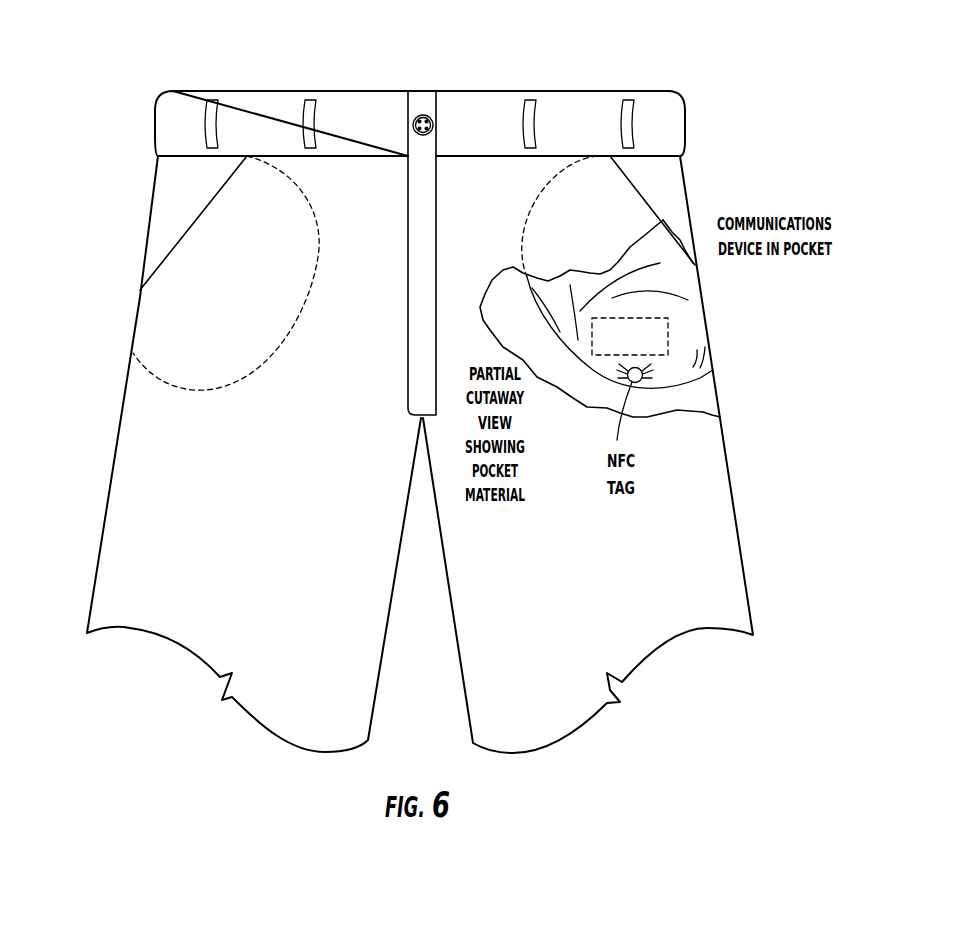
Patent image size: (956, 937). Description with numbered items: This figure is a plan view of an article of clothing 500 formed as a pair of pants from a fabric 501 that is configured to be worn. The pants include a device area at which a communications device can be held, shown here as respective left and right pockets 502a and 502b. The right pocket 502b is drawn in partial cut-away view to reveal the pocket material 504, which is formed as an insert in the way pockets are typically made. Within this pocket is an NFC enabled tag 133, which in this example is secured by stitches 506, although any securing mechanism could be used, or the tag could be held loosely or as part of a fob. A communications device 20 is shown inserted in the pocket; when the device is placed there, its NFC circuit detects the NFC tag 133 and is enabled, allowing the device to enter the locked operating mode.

The article of clothing 500 is at (700, 105).
The fabric 501 is at (170, 477).
The left pocket 502a is at (158, 312).
The right pocket 502b is at (625, 192).
The pocket material 504 is at (587, 272).
The communications device 20 is at (668, 333).
The stitches 506 is at (642, 377).
The NFC enabled tag 133 is at (639, 382).